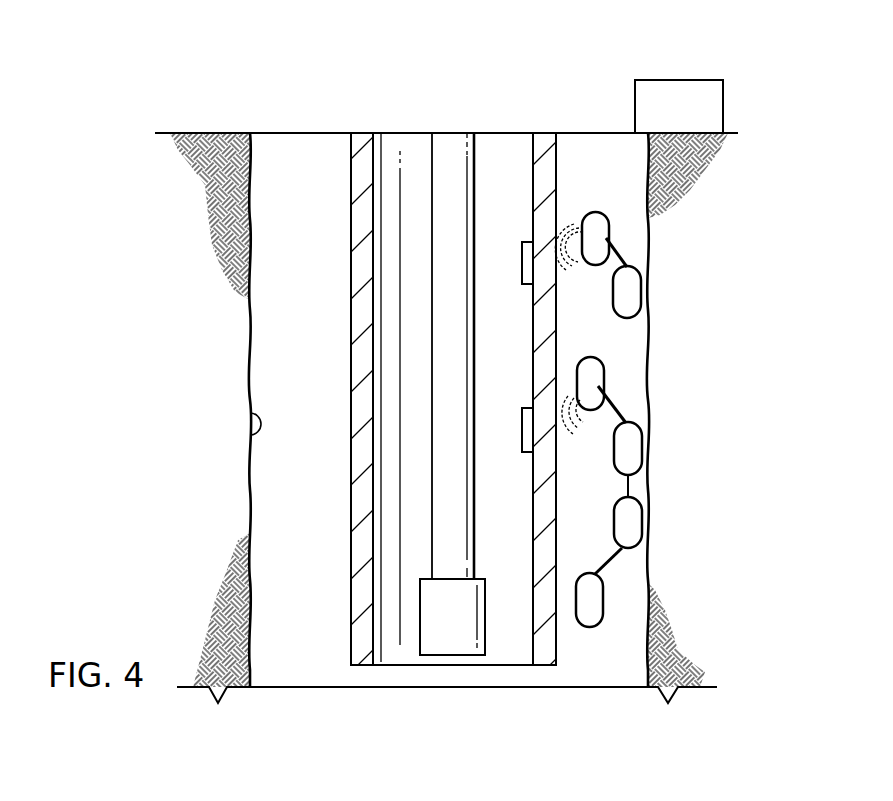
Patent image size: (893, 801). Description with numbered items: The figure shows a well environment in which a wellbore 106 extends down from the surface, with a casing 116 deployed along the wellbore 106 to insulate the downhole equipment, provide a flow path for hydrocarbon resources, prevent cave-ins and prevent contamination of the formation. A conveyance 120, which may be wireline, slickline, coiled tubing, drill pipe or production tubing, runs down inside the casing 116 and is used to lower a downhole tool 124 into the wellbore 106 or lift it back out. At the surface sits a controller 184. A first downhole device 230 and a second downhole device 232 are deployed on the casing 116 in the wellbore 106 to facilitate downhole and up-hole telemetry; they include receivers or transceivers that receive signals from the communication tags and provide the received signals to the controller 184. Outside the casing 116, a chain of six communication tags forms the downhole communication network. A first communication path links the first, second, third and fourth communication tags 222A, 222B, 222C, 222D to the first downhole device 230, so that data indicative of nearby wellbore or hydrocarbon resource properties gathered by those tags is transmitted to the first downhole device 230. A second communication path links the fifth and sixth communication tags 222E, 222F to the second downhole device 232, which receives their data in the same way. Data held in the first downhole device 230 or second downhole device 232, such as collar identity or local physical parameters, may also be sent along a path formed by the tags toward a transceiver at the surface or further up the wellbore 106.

The wellbore 106 is at (250, 416).
The casing 116 is at (352, 362).
The conveyance 120 is at (431, 143).
The downhole tool 124 is at (485, 590).
The controller 184 is at (680, 80).
The first downhole device 230 is at (522, 427).
The second downhole device 232 is at (522, 263).
The first communication tag 222A is at (590, 628).
The second communication tag 222B is at (642, 522).
The third communication tag 222C is at (642, 448).
The fourth communication tag 222D is at (605, 380).
The fifth communication tag 222E is at (641, 296).
The sixth communication tag 222F is at (596, 212).